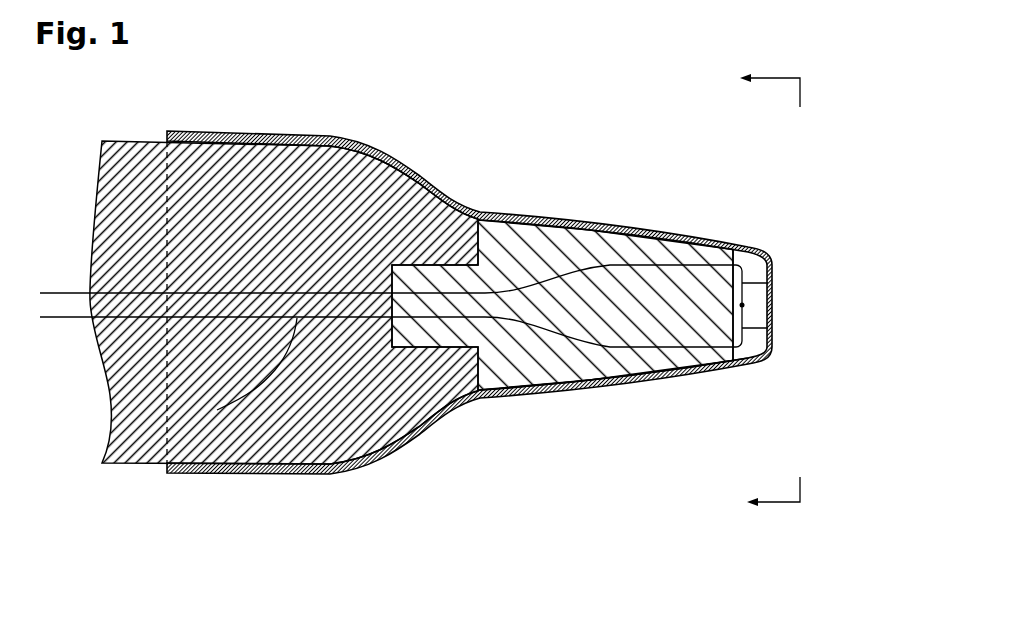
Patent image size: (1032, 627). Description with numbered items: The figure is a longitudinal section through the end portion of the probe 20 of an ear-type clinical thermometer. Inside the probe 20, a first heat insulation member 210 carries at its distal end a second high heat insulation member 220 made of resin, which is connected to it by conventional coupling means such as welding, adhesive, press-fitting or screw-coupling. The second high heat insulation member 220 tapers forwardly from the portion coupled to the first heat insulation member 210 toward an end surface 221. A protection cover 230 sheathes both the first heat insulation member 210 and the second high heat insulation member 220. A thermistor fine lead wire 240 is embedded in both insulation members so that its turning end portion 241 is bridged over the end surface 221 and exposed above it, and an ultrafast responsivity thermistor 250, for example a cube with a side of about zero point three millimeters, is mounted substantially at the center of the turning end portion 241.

The probe 20 is at (452, 137).
The first heat insulation member 210 is at (343, 463).
The second high heat insulation member 220 is at (522, 228).
The end surface 221 is at (772, 283).
The protection cover 230 is at (600, 387).
The thermistor fine lead wire 240 is at (195, 430).
The turning end portion 241 is at (772, 328).
The ultrafast responsivity thermistor 250 is at (742, 305).